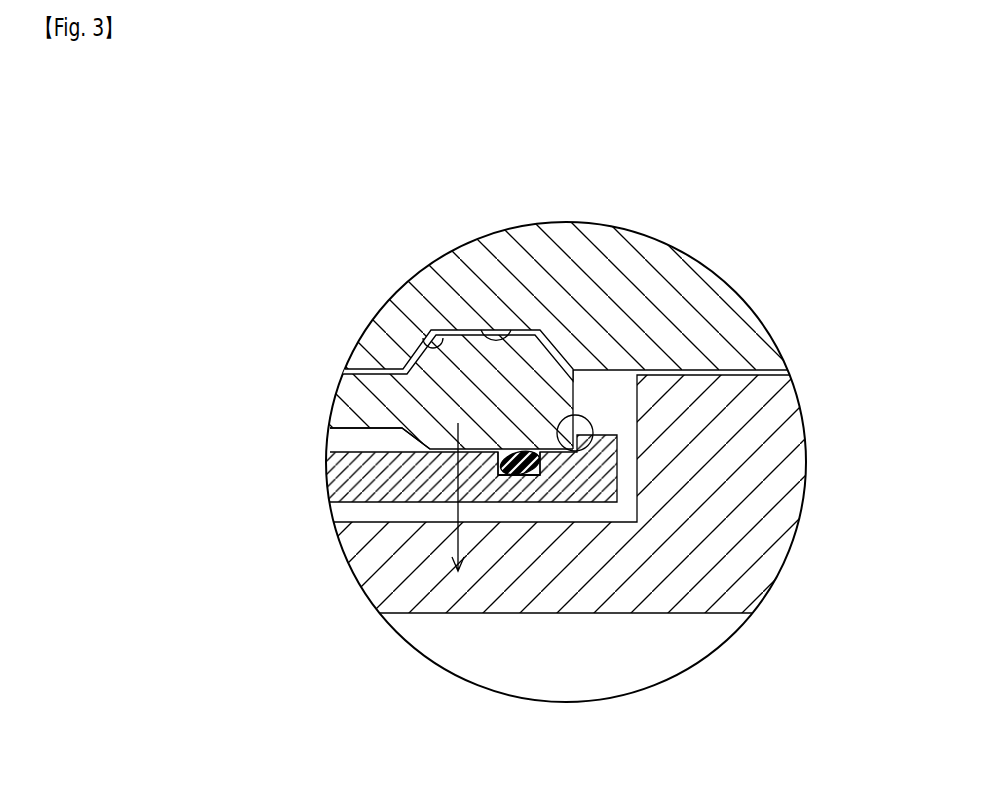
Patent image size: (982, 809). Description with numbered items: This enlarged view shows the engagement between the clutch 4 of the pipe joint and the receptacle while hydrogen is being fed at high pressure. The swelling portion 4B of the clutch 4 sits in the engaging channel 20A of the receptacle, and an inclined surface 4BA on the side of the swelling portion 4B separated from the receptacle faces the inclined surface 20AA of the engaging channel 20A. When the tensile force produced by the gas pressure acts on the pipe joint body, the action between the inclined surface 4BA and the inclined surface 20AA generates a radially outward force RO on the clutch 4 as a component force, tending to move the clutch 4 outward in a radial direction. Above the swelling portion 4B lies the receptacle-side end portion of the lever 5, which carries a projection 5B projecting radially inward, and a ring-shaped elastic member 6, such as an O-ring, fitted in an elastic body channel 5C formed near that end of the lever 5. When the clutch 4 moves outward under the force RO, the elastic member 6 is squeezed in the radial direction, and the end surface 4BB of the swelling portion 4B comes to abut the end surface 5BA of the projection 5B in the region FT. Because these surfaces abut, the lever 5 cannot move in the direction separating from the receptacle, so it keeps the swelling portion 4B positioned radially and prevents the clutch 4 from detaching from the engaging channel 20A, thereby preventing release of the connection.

The clutch 4 is at (363, 396).
The swelling portion 4B is at (527, 378).
The inclined surface 4BA is at (362, 402).
The end surface 4BB is at (577, 403).
The engaging channel 20A is at (512, 330).
The inclined surface 20AA is at (432, 342).
The lever 5 is at (367, 488).
The projection 5B is at (617, 487).
The end surface 5BA is at (545, 476).
The elastic body channel 5C is at (509, 478).
The ring-shaped elastic member 6 is at (526, 473).
The region FT is at (583, 430).
The radially outward force RO is at (453, 537).